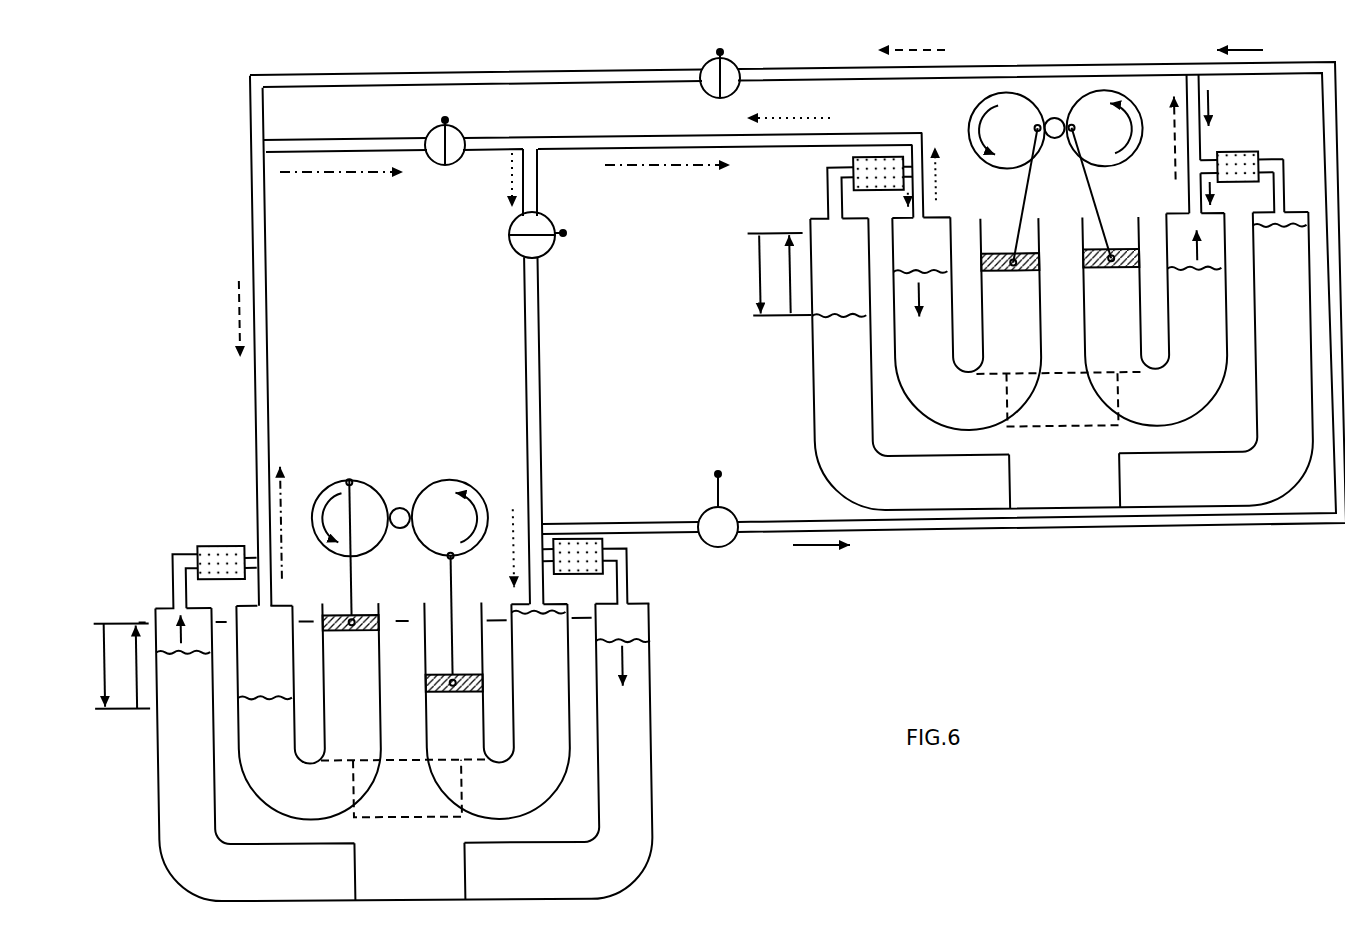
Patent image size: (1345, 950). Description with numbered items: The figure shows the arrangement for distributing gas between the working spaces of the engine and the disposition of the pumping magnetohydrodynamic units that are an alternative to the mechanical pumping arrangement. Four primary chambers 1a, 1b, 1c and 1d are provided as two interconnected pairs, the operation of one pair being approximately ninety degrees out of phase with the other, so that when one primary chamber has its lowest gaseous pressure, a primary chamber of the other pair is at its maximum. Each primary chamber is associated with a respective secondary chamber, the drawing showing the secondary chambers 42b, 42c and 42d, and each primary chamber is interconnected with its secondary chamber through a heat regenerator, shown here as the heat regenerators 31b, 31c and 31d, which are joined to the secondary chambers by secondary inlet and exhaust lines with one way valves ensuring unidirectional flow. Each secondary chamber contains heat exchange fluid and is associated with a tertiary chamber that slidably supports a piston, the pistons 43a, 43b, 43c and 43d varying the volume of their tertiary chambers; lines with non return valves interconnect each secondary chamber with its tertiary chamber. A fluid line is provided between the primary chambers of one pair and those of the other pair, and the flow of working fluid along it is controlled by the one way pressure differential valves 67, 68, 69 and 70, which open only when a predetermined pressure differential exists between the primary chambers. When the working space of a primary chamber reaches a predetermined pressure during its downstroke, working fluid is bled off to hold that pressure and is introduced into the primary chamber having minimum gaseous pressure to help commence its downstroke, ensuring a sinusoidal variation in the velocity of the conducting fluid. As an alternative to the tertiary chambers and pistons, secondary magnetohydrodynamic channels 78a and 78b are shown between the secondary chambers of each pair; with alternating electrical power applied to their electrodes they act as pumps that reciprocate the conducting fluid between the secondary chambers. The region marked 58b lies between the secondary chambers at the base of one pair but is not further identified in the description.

The primary chamber 1a is at (653, 625).
The primary chamber 1b is at (804, 217).
The primary chamber 1c is at (1299, 273).
The primary chamber 1d is at (154, 609).
The heat regenerator 31b is at (883, 166).
The heat regenerator 31c is at (1242, 166).
The heat regenerator 31d is at (228, 545).
The secondary chamber 42b is at (967, 281).
The secondary chamber 42c is at (1223, 239).
The secondary chamber 42d is at (309, 711).
The piston 43a is at (466, 692).
The piston 43b is at (1011, 272).
The piston 43c is at (1126, 272).
The piston 43d is at (349, 575).
The partition 58b is at (1088, 498).
The one way pressure differential valve 67 is at (712, 506).
The one way pressure differential valve 68 is at (738, 54).
The one way pressure differential valve 69 is at (437, 128).
The one way pressure differential valve 70 is at (510, 226).
The secondary magnetohydrodynamic channel 78a is at (427, 806).
The secondary magnetohydrodynamic channel 78b is at (1085, 417).